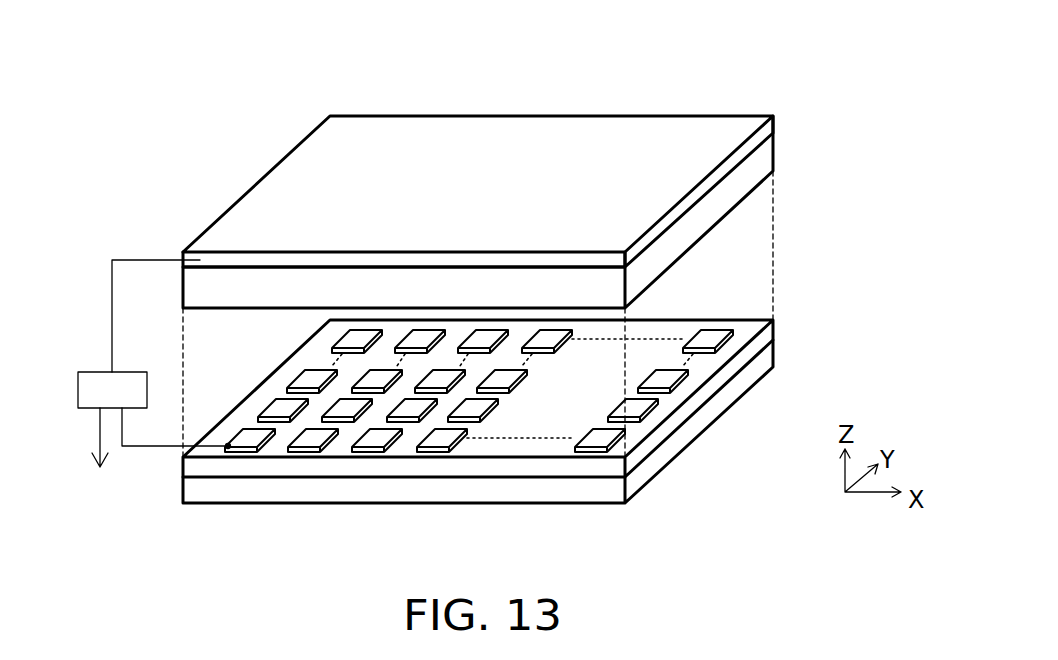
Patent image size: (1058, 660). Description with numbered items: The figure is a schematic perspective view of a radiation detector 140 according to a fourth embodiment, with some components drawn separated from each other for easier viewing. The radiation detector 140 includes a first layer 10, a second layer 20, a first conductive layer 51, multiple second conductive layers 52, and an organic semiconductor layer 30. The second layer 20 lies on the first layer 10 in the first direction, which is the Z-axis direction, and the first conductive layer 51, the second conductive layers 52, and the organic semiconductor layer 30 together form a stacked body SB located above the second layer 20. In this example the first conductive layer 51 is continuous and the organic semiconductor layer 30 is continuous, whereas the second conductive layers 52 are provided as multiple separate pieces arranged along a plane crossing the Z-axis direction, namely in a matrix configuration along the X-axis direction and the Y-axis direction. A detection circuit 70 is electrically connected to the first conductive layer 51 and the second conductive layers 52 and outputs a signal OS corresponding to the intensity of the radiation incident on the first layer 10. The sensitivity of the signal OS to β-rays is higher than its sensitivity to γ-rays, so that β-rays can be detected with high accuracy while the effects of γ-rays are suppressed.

The radiation detector 140 is at (819, 59).
The first conductive layer 51 is at (767, 132).
The organic semiconductor layer 30 is at (767, 155).
The stacked body SB is at (842, 123).
The second conductive layer 52 is at (247, 437).
The second layer 20 is at (485, 467).
The first layer 10 is at (568, 488).
The detection circuit 70 is at (98, 370).
The signal OS is at (98, 432).